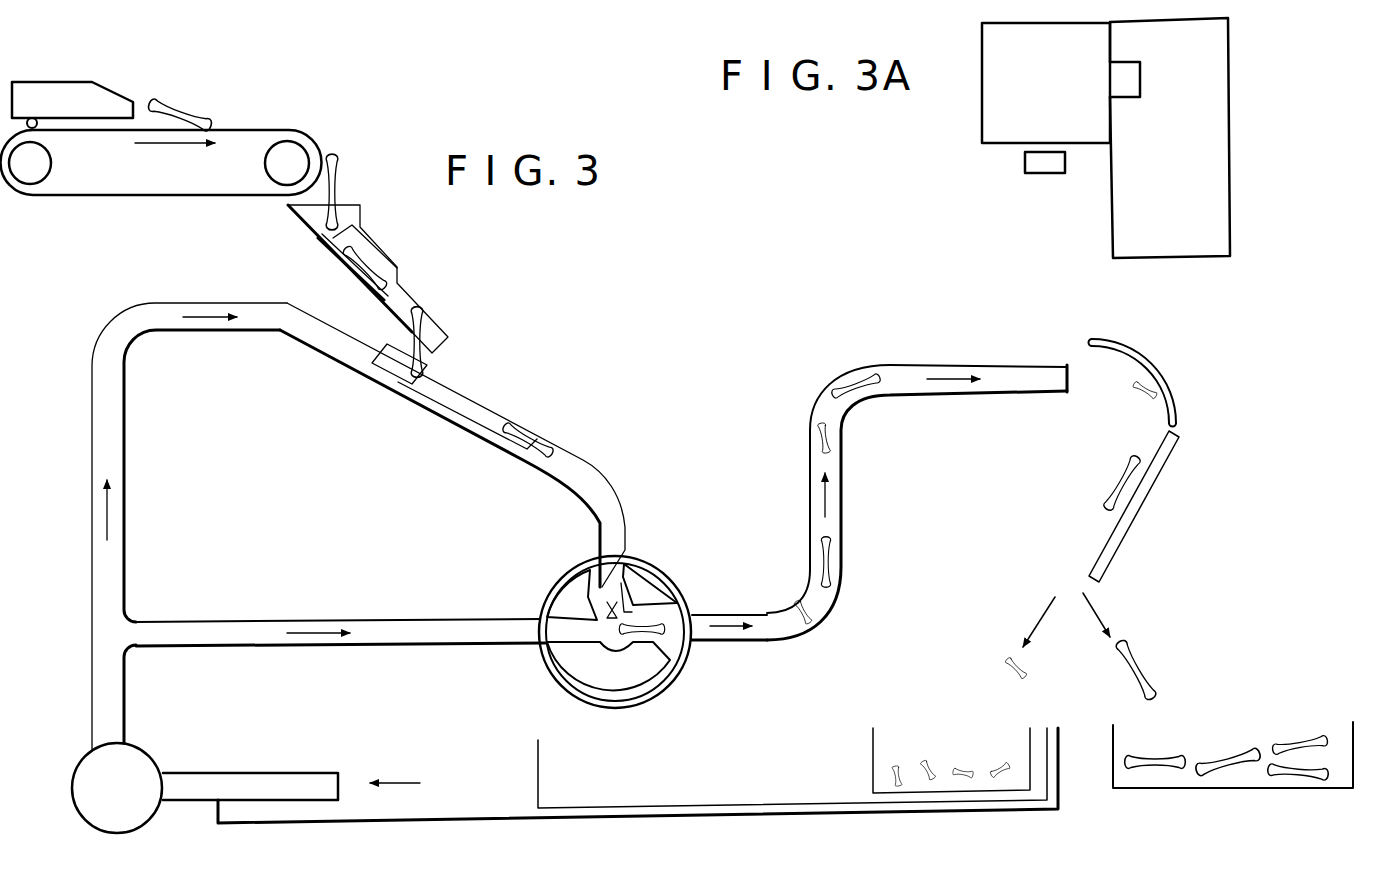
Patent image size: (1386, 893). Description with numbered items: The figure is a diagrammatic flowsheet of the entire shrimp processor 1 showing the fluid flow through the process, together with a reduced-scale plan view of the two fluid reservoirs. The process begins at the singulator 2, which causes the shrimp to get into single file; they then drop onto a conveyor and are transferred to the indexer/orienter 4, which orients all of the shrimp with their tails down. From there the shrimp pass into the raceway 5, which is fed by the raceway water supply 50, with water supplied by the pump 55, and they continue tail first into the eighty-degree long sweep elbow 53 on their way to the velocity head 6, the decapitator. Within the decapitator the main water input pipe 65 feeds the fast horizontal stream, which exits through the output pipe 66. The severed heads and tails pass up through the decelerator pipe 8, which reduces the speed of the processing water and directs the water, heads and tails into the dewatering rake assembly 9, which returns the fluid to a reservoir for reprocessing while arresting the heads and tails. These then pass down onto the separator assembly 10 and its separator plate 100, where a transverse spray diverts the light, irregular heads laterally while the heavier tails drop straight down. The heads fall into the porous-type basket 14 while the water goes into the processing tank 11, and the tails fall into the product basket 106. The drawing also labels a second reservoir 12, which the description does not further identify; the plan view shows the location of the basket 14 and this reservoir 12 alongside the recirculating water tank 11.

In FIG. 3, the shrimp processor 1 is at (723, 308).
In FIG. 3, the singulator 2 is at (123, 95).
In FIG. 3, the indexer/orienter 4 is at (410, 293).
In FIG. 3, the raceway 5 is at (472, 400).
In FIG. 3, the velocity head 6 is at (678, 582).
In FIG. 3, the decelerator pipe 8 is at (808, 467).
In FIG. 3, the dewatering rake assembly 9 is at (1180, 382).
In FIG. 3, the separator assembly 10 is at (588, 425).
In FIG. 3, the processing tank 11 is at (218, 773).
In FIG. 3A, the processing tank 11 is at (1228, 163).
In FIG. 3, the return air duct 12 is at (683, 805).
In FIG. 3A, the return air duct 12 is at (995, 145).
In FIG. 3, the porous-type basket 14 is at (873, 745).
In FIG. 3A, the porous-type basket 14 is at (1140, 77).
In FIG. 3, the raceway water supply 50 is at (340, 347).
In FIG. 3, the 80° long sweep elbow 53 is at (588, 482).
In FIG. 3, the pump 55 is at (108, 808).
In FIG. 3, the main water input pipe 65 is at (510, 618).
In FIG. 3, the output pipe 66 is at (713, 633).
In FIG. 3, the separator plate 100 is at (1147, 497).
In FIG. 3, the product basket 106 is at (1237, 790).
In FIG. 3A, the product basket 106 is at (1045, 173).